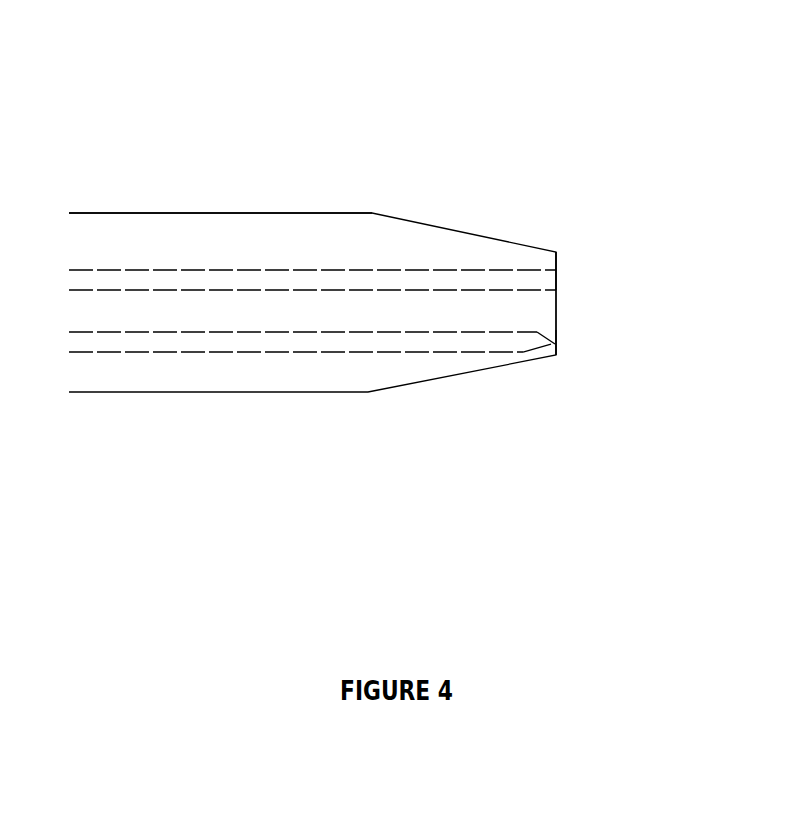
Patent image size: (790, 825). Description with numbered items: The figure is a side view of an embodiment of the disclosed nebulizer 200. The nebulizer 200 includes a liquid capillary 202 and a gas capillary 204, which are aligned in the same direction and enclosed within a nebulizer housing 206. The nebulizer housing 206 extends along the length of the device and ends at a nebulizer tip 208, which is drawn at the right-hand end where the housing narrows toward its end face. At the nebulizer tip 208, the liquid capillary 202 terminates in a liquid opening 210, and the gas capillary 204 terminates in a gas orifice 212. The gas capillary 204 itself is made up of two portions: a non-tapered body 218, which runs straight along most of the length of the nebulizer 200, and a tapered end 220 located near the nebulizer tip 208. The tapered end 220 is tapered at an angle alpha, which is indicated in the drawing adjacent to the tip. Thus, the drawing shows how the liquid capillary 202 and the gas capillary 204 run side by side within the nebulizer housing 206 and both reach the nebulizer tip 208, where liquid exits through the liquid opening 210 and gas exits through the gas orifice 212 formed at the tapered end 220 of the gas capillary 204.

The nebulizer 200 is at (312, 216).
The liquid capillary 202 is at (430, 278).
The gas capillary 204 is at (315, 343).
The nebulizer housing 206 is at (228, 208).
The nebulizer tip 208 is at (558, 310).
The liquid opening 210 is at (558, 278).
The gas orifice 212 is at (558, 340).
The non-tapered body 218 is at (500, 340).
The tapered end 220 is at (540, 353).